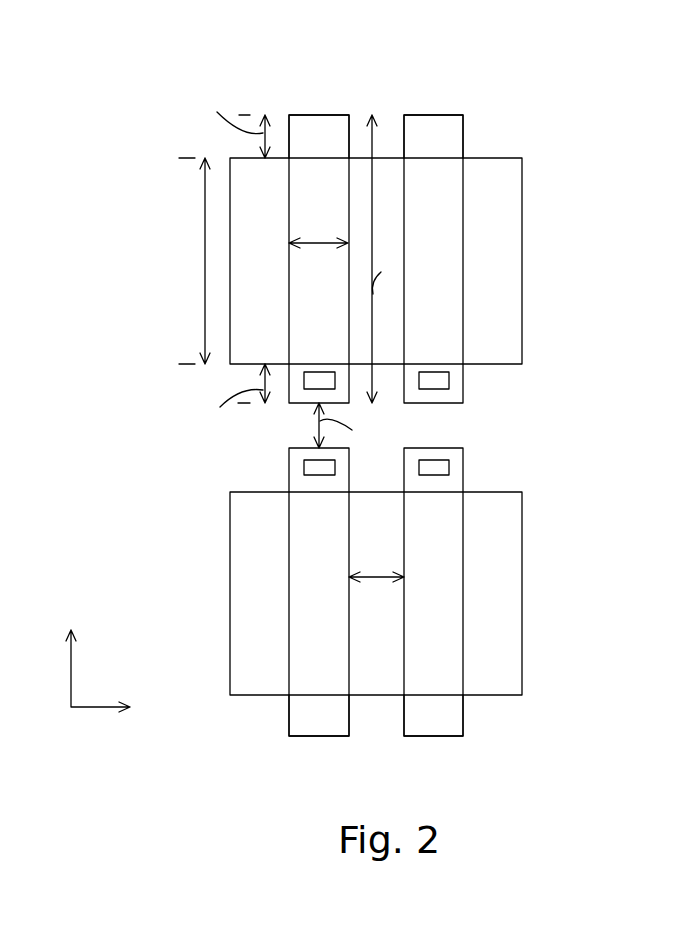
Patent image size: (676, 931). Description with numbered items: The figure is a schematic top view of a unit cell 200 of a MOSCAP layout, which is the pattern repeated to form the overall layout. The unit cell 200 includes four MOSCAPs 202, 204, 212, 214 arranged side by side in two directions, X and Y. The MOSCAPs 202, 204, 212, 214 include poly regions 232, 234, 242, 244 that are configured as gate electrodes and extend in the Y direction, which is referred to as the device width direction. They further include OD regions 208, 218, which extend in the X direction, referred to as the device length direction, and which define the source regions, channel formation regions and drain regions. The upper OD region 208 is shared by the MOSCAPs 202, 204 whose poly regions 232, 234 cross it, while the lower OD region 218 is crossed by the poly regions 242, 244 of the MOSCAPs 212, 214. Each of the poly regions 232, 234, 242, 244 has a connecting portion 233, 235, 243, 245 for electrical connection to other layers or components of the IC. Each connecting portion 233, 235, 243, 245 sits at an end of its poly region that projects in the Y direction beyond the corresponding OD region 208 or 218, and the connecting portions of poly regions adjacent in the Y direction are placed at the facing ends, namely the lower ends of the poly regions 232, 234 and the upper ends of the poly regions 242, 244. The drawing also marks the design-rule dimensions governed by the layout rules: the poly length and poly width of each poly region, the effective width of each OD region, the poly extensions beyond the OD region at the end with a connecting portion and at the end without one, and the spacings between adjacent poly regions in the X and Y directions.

The unit cell 200 is at (142, 44).
The MOSCAP 202 is at (306, 99).
The MOSCAP 204 is at (440, 99).
The OD region 208 is at (522, 260).
The MOSCAP 212 is at (306, 750).
The MOSCAP 214 is at (439, 752).
The OD region 218 is at (522, 592).
The poly region 232 is at (289, 142).
The connecting portion 233 is at (304, 380).
The poly region 234 is at (463, 142).
The connecting portion 235 is at (449, 380).
The poly region 242 is at (289, 718).
The connecting portion 243 is at (304, 467).
The poly region 244 is at (463, 716).
The connecting portion 245 is at (449, 467).